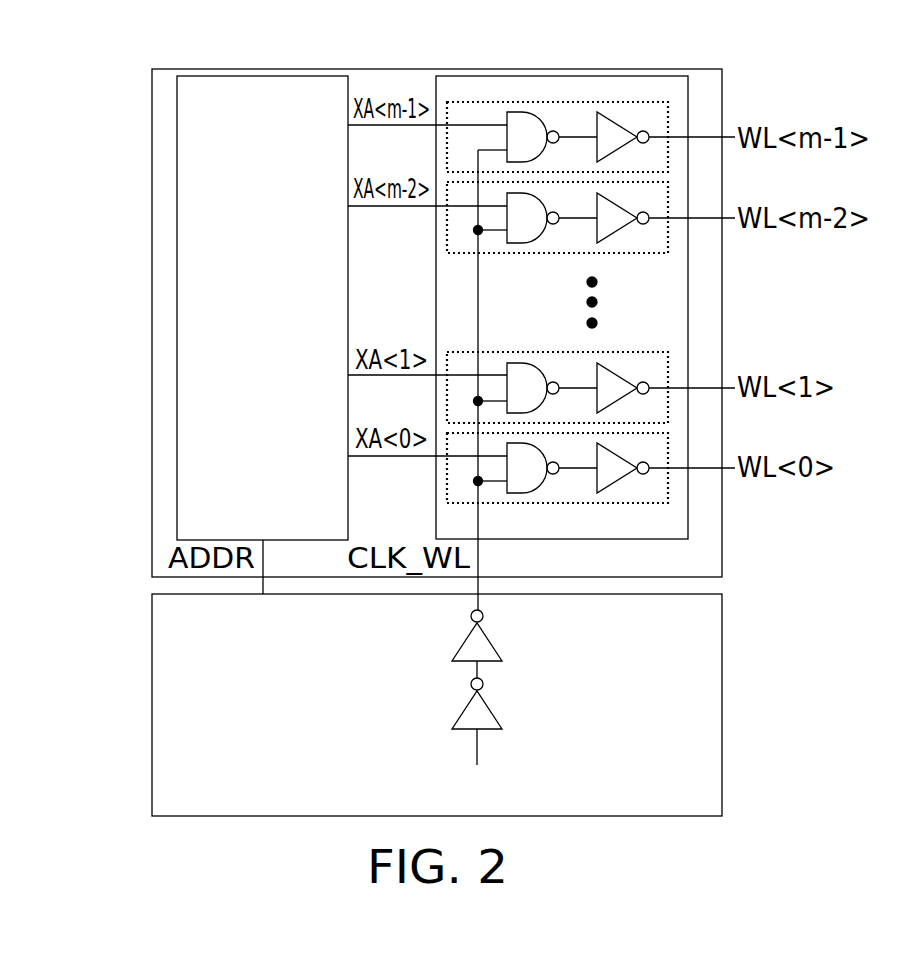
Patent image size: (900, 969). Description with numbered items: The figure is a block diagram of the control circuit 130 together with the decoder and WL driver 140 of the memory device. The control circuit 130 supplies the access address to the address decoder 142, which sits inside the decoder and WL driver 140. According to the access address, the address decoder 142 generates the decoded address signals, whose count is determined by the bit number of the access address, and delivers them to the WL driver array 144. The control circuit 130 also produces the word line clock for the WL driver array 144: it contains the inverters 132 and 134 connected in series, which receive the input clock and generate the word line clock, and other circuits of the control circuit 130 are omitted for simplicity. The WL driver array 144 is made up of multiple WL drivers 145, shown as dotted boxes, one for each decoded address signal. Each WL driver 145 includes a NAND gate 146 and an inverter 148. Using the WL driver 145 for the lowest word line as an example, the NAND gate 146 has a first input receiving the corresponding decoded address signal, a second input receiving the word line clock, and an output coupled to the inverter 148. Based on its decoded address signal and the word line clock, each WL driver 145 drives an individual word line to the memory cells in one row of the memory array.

The control circuit 130 is at (152, 703).
The inverter 132 is at (490, 708).
The inverter 134 is at (490, 638).
The decoder and WL driver 140 is at (152, 396).
The address decoder 142 is at (177, 228).
The WL driver array 144 is at (688, 290).
The WL driver 145 is at (668, 115).
The NAND gate 146 is at (520, 112).
The inverter 148 is at (617, 120).